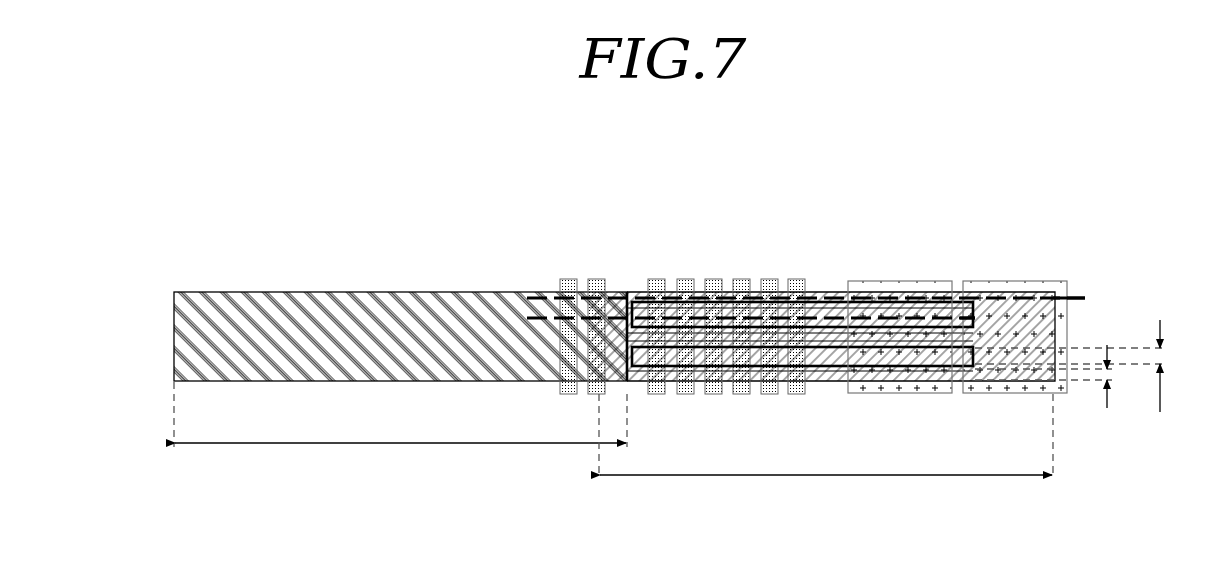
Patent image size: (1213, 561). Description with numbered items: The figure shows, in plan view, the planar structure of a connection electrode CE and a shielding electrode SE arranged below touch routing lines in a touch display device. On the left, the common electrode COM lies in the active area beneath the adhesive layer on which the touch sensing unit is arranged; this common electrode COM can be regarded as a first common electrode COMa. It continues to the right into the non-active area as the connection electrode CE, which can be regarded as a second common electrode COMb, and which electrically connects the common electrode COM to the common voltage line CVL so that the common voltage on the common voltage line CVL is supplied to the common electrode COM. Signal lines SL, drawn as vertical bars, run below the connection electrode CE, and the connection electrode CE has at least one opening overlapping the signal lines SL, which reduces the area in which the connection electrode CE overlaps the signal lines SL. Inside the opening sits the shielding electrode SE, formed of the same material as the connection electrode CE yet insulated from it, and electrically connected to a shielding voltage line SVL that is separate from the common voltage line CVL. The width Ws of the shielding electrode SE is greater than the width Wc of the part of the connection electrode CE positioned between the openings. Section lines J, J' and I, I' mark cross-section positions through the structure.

The common electrode COM is at (392, 307).
The first common electrode COMa is at (400, 426).
The second common electrode COMb is at (826, 448).
The connection electrode CE is at (830, 380).
The shielding electrode SE is at (822, 300).
The signal lines SL is at (768, 395).
The shielding voltage line SVL is at (898, 281).
The common voltage line CVL is at (1012, 281).
The width of the shielding electrode Ws is at (1088, 366).
The width of the connection electrode Wc is at (1061, 376).
The section line J is at (803, 282).
The section line J' is at (1079, 299).
The section line I is at (751, 328).
The section line I' is at (976, 323).